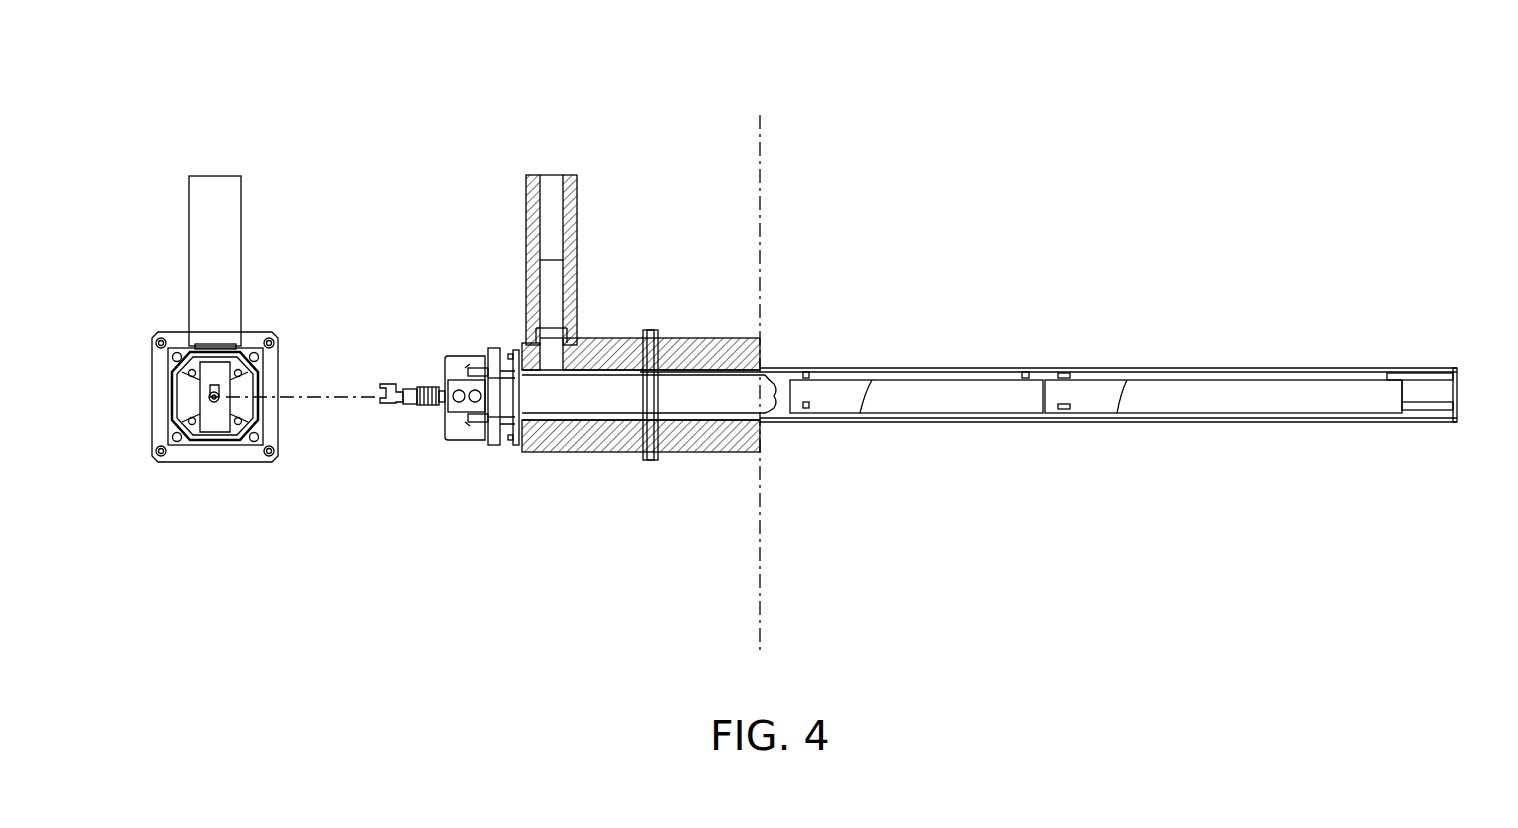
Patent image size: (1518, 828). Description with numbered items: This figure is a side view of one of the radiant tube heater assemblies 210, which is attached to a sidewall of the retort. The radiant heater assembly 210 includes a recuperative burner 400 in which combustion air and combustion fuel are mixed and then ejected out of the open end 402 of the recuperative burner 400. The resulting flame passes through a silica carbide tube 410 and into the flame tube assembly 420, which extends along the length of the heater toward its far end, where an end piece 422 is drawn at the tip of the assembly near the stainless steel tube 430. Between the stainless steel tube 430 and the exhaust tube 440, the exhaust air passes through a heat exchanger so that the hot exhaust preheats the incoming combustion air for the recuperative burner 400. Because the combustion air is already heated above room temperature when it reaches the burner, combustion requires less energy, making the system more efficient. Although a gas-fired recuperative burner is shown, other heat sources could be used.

The radiant tube heater assembly 210 is at (640, 115).
The recuperative burner 400 is at (462, 430).
The open end 402 is at (773, 410).
The silica carbide tube 410 is at (960, 403).
The flame tube assembly 420 is at (1246, 400).
The end piece 422 is at (1414, 395).
The stainless steel tube 430 is at (1458, 410).
The exhaust tube 440 is at (577, 193).